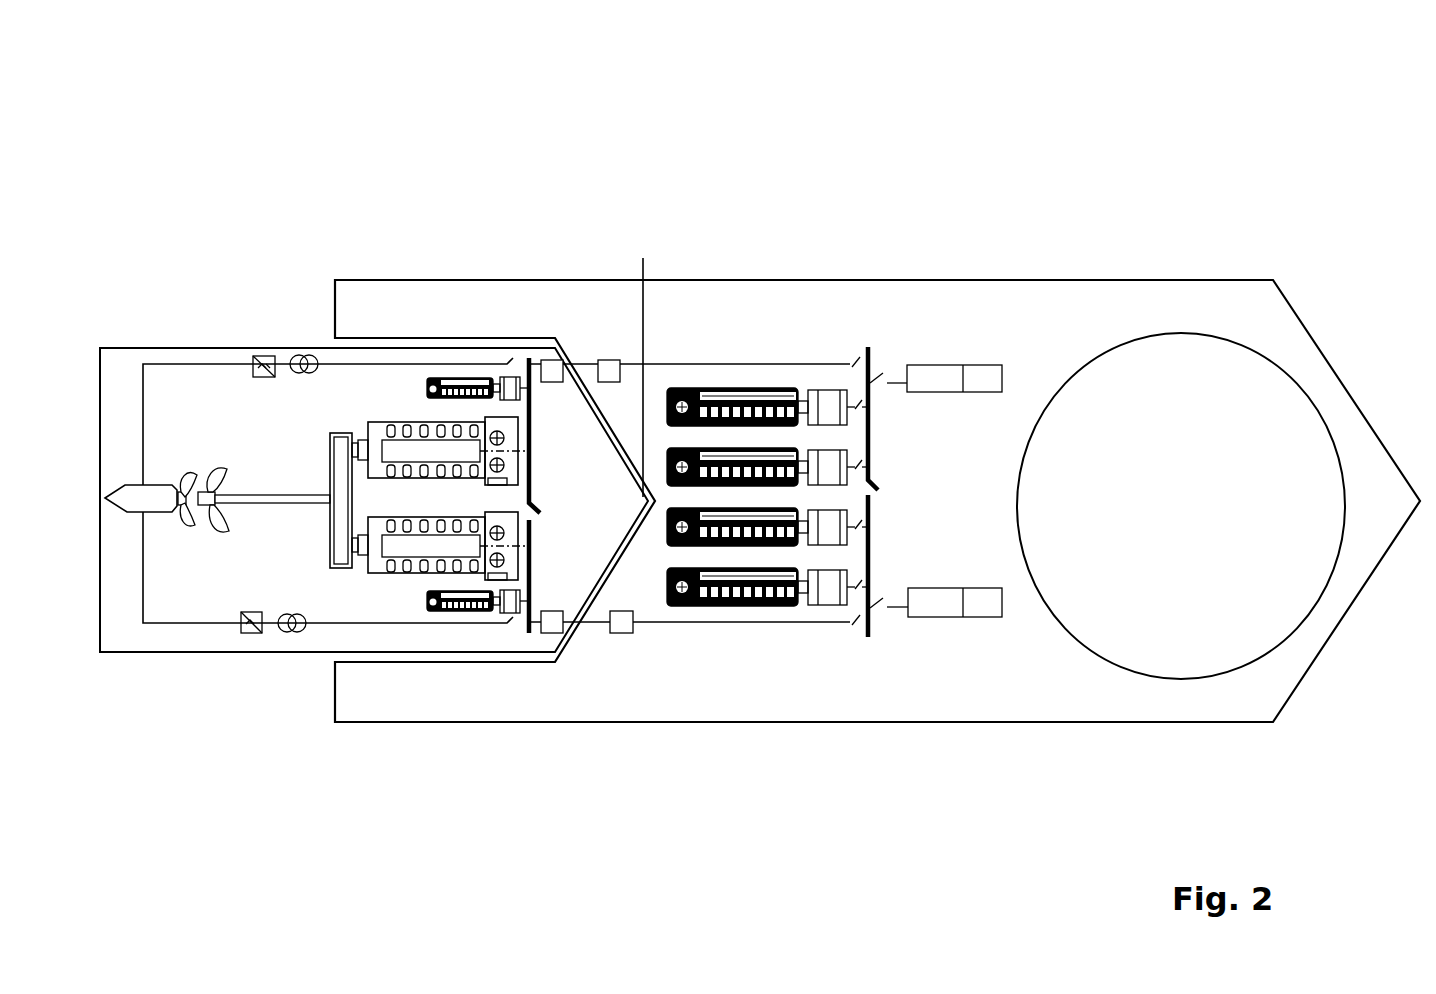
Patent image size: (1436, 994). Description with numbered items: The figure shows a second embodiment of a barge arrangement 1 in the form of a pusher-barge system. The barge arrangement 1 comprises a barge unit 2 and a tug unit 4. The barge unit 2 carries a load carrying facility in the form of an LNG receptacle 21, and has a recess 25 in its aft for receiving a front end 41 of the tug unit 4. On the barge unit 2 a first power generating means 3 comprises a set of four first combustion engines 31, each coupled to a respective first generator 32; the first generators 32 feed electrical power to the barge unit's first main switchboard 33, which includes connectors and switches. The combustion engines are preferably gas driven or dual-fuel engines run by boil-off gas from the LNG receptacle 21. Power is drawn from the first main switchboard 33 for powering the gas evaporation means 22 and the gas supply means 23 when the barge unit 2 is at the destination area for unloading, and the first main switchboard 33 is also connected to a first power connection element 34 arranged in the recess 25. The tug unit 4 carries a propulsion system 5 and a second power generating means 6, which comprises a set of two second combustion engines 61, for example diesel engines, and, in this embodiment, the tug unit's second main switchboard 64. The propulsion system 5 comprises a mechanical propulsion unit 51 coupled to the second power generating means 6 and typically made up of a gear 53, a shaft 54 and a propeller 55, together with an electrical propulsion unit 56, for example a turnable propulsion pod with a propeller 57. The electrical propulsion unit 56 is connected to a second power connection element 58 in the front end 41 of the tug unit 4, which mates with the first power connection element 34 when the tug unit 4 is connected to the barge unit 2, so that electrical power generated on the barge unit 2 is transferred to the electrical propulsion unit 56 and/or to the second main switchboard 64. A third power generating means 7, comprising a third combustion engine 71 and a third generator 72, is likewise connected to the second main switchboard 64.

The barge arrangement 1 is at (725, 220).
The barge unit 2 is at (1192, 313).
The LNG receptacle 21 is at (1250, 438).
The first power generating means 3 is at (712, 358).
The first combustion engine 31 is at (712, 612).
The first generator 32 is at (828, 592).
The first main switchboard 33 is at (890, 505).
The first power connection element 34 is at (608, 371).
The tug unit 4 is at (202, 358).
The front end 41 is at (633, 365).
The propulsion system 5 is at (202, 557).
The mechanical propulsion unit 51 is at (280, 520).
The gear 53 is at (345, 450).
The shaft 54 is at (279, 495).
The propeller 55 is at (226, 470).
The electrical propulsion unit 56 is at (122, 495).
The propeller 57 is at (188, 480).
The second power connection element 58 is at (552, 371).
The second power generating means 6 is at (383, 590).
The second combustion engine 61 is at (417, 553).
The second main switchboard 64 is at (537, 467).
The third power generating means 7 is at (472, 625).
The third combustion engine 71 is at (448, 617).
The third generator 72 is at (513, 622).
The gas evaporation means 22 is at (983, 372).
The gas supply means 23 is at (940, 372).
The recess 25 is at (517, 350).